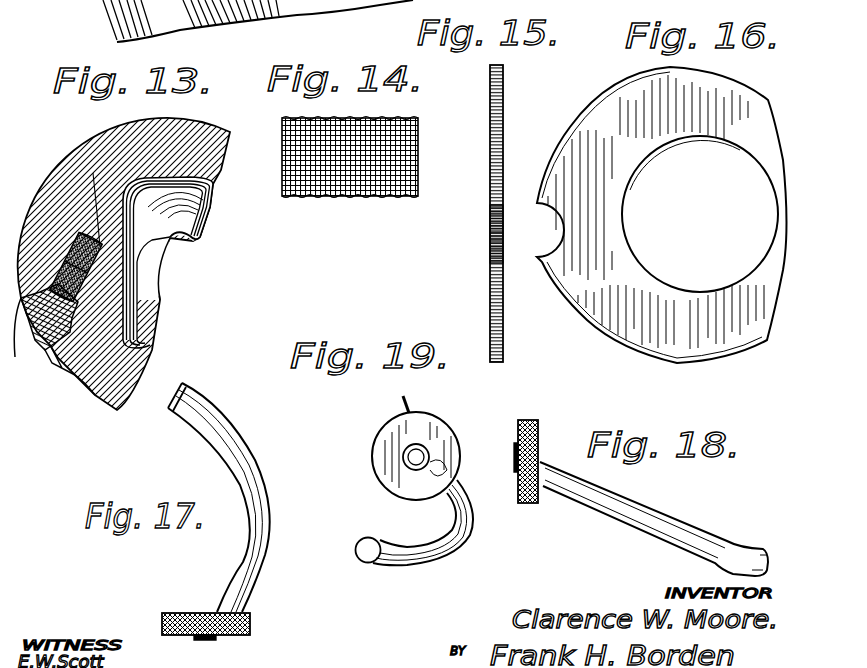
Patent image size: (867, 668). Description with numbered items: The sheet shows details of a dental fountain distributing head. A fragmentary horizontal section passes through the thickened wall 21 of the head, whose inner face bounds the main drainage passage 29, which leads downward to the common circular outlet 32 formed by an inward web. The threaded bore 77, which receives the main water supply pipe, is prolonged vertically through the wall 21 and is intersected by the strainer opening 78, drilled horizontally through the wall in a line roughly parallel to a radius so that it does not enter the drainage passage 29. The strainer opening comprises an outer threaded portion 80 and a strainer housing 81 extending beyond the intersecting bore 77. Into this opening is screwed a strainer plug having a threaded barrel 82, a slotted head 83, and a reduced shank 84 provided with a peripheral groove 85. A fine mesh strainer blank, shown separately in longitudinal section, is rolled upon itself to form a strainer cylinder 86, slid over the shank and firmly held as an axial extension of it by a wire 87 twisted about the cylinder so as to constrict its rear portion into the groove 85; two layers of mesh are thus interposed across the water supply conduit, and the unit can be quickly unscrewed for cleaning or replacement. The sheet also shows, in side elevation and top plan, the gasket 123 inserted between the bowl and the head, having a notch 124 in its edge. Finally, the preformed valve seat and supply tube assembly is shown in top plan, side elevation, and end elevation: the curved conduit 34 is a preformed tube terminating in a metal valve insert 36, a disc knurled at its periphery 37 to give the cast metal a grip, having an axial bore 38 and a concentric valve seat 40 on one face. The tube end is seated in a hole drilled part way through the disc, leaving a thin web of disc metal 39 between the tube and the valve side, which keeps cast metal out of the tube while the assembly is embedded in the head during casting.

In FIG. 13, the thickened wall 21 is at (52, 176).
In FIG. 13, the main drainage passage 29 is at (182, 217).
In FIG. 13, the common circular outlet 32 is at (173, 243).
In FIG. 13, the threaded bore 77 is at (100, 262).
In FIG. 13, the strainer opening 78 is at (77, 257).
In FIG. 13, the outer threaded portion 80 is at (19, 337).
In FIG. 13, the strainer housing 81 is at (72, 170).
In FIG. 13, the threaded barrel 82 is at (90, 382).
In FIG. 13, the slotted head 83 is at (52, 364).
In FIG. 13, the reduced shank 84 is at (25, 297).
In FIG. 13, the groove 85 is at (90, 260).
In FIG. 13, the strainer cylinder 86 is at (100, 247).
In FIG. 14, the strainer cylinder 86 is at (347, 196).
In FIG. 13, the wire 87 is at (53, 300).
In FIG. 16, the gasket 123 is at (498, 285).
In FIG. 15, the notch 124 is at (543, 226).
In FIG. 17, the conduit 34 is at (270, 513).
In FIG. 19, the conduit 34 is at (452, 540).
In FIG. 18, the conduit 34 is at (620, 528).
In FIG. 17, the metal valve insert 36 is at (250, 624).
In FIG. 19, the metal valve insert 36 is at (402, 428).
In FIG. 18, the metal valve insert 36 is at (526, 419).
In FIG. 17, the knurled periphery 37 is at (180, 613).
In FIG. 18, the knurled periphery 37 is at (538, 432).
In FIG. 19, the axial bore 38 is at (425, 450).
In FIG. 19, the thin web of disc metal 39 is at (442, 462).
In FIG. 17, the valve seat 40 is at (210, 641).
In FIG. 19, the valve seat 40 is at (413, 445).
In FIG. 18, the valve seat 40 is at (514, 460).